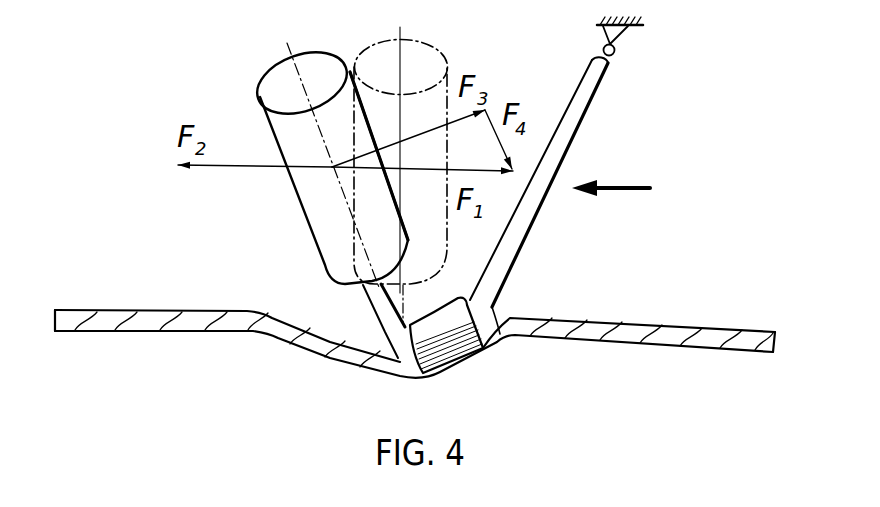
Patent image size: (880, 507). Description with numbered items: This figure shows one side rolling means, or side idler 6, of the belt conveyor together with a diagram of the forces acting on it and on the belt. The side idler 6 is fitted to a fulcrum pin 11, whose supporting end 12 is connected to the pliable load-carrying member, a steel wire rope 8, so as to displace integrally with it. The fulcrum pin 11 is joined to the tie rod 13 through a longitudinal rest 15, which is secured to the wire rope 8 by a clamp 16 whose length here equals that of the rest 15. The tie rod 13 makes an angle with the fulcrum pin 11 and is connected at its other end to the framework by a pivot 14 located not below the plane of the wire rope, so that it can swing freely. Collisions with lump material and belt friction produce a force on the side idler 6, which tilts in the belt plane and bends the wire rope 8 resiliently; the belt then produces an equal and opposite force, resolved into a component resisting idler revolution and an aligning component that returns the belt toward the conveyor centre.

The side rolling means 6 is at (353, 76).
The pliable load-carrying member 8 is at (687, 323).
The fulcrum pin 11 is at (373, 285).
The supporting end 12 is at (324, 355).
The tie rod 13 is at (578, 122).
The pivot 14 is at (616, 47).
The longitudinal rest 15 is at (490, 305).
The clamp 16 is at (436, 337).